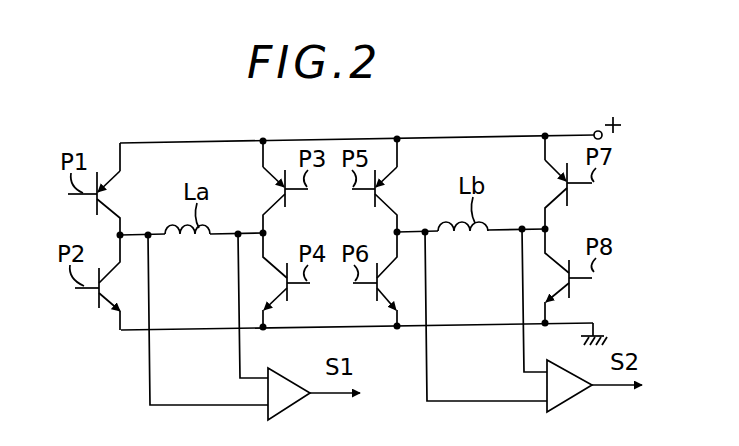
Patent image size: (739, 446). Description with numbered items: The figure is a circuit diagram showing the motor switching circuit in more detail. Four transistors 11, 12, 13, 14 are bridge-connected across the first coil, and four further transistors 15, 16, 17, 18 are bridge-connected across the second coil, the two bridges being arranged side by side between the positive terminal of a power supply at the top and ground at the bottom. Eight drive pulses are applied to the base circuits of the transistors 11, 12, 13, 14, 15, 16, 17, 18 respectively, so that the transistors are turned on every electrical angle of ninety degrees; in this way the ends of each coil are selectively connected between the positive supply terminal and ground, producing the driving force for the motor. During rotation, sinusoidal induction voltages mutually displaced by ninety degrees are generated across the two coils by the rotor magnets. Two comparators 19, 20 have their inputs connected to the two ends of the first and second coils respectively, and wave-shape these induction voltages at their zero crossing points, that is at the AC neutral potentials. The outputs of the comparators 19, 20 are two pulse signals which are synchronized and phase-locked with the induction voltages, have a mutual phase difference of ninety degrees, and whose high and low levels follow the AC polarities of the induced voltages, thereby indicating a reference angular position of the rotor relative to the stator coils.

The transistor 11 is at (97, 209).
The transistor 12 is at (98, 300).
The transistor 13 is at (287, 208).
The transistor 14 is at (287, 294).
The transistor 15 is at (374, 208).
The transistor 16 is at (374, 294).
The transistor 17 is at (577, 199).
The transistor 18 is at (577, 288).
The comparator 19 is at (266, 422).
The comparator 20 is at (575, 399).